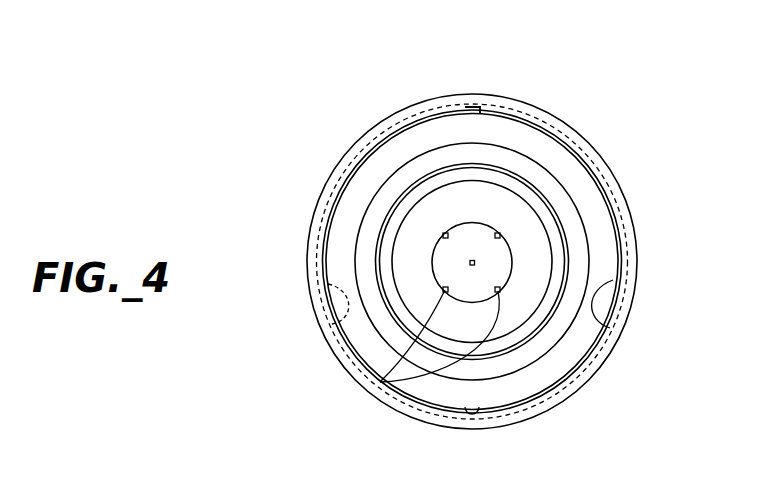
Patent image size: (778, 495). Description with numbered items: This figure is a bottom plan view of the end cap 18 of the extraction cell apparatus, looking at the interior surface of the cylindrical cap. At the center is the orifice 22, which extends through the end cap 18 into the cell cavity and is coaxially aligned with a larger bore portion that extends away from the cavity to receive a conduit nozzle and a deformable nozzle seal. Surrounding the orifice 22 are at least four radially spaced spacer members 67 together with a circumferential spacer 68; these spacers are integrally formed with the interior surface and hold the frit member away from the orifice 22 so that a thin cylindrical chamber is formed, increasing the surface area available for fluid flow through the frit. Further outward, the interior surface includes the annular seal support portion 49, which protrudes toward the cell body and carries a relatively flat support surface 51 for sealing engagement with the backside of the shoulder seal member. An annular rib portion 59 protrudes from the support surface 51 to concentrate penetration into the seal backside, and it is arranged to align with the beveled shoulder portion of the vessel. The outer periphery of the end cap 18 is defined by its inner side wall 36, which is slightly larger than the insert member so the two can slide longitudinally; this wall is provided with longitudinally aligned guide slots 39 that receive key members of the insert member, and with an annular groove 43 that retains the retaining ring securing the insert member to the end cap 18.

The end cap 18 is at (546, 111).
The orifice 22 is at (476, 261).
The inner side wall 36 is at (610, 328).
The guide slots 39 is at (470, 108).
The annular groove 43 is at (332, 324).
The annular seal support portion 49 is at (523, 368).
The support surface 51 is at (548, 340).
The annular rib portion 59 is at (538, 184).
The spacer members 67 is at (380, 382).
The circumferential spacer 68 is at (483, 348).